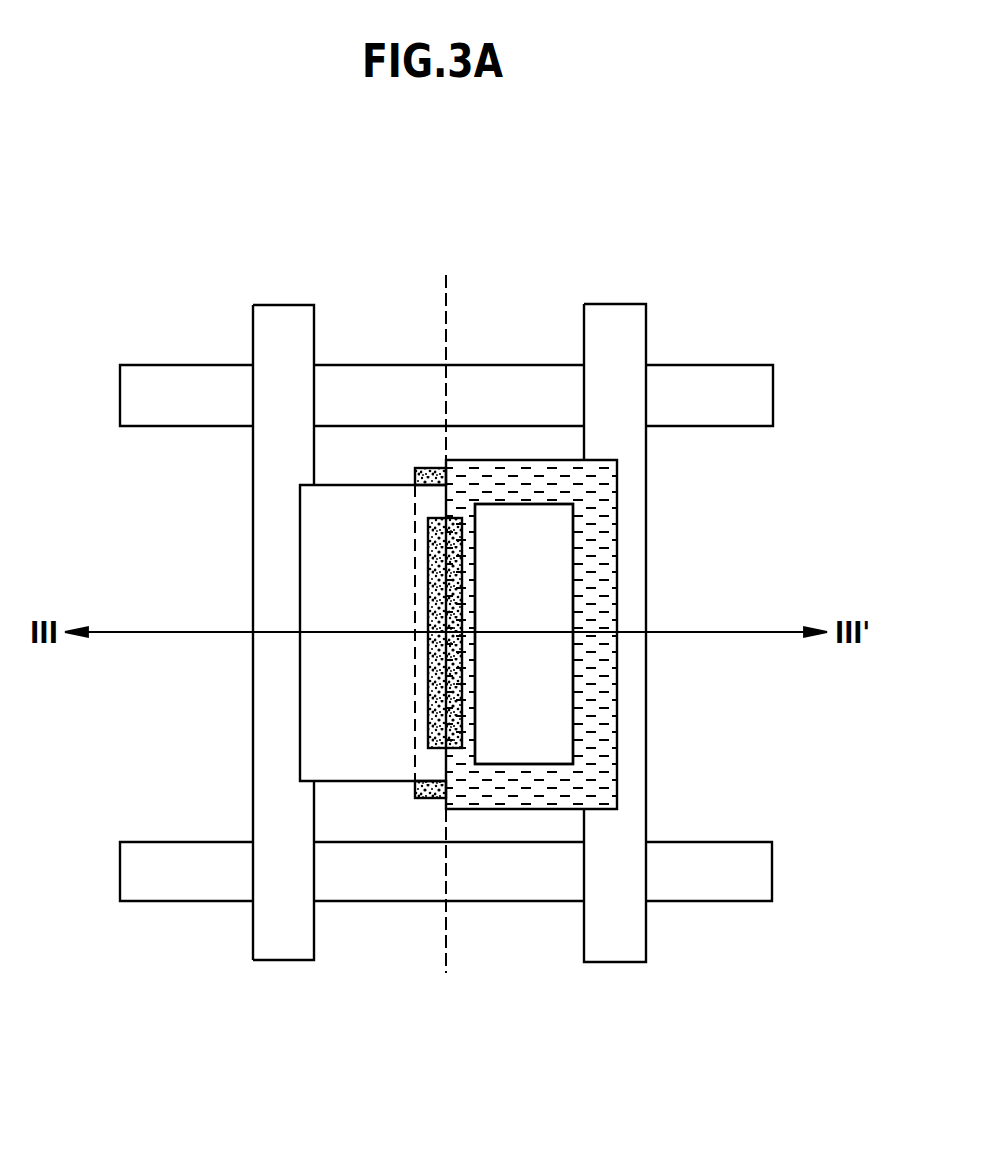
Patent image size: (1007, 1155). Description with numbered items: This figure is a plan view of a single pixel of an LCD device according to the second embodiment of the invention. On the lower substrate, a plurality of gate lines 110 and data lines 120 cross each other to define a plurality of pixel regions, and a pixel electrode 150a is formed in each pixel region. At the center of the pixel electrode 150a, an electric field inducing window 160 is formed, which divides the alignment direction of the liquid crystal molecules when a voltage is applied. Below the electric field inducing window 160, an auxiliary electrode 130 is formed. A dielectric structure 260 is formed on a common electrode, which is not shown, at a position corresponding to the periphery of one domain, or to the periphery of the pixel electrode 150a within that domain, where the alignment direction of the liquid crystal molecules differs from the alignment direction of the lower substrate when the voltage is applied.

The gate line 110 is at (757, 395).
The data line 120 is at (628, 328).
The auxiliary electrode 130 is at (428, 800).
The pixel electrode 150a is at (540, 560).
The electric field inducing window 160 is at (430, 565).
The dielectric structure 260 is at (502, 476).